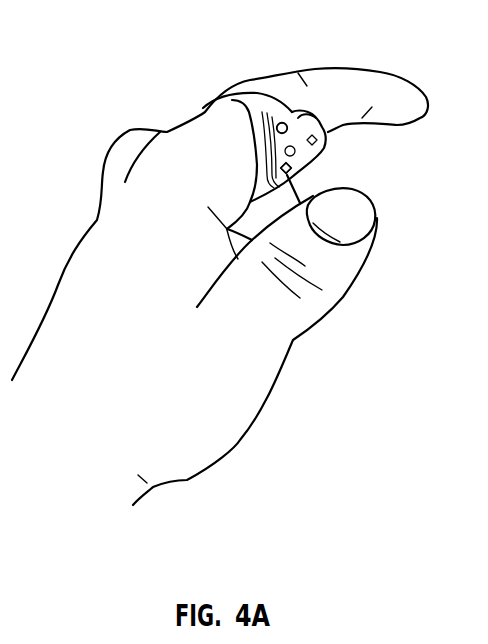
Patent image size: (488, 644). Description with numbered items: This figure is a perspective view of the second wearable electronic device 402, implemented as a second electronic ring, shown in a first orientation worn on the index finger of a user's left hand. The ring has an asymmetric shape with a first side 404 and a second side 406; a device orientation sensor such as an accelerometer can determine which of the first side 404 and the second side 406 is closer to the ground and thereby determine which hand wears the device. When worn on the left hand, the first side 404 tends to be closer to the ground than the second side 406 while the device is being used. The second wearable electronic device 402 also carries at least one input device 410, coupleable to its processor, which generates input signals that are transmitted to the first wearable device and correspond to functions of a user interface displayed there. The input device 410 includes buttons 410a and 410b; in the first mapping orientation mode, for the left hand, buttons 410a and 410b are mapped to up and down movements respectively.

The second wearable electronic device 402 is at (242, 90).
The first side 404 is at (313, 153).
The second side 406 is at (305, 120).
The input device 410 is at (290, 134).
The button 410a is at (277, 127).
The button 410b is at (291, 171).